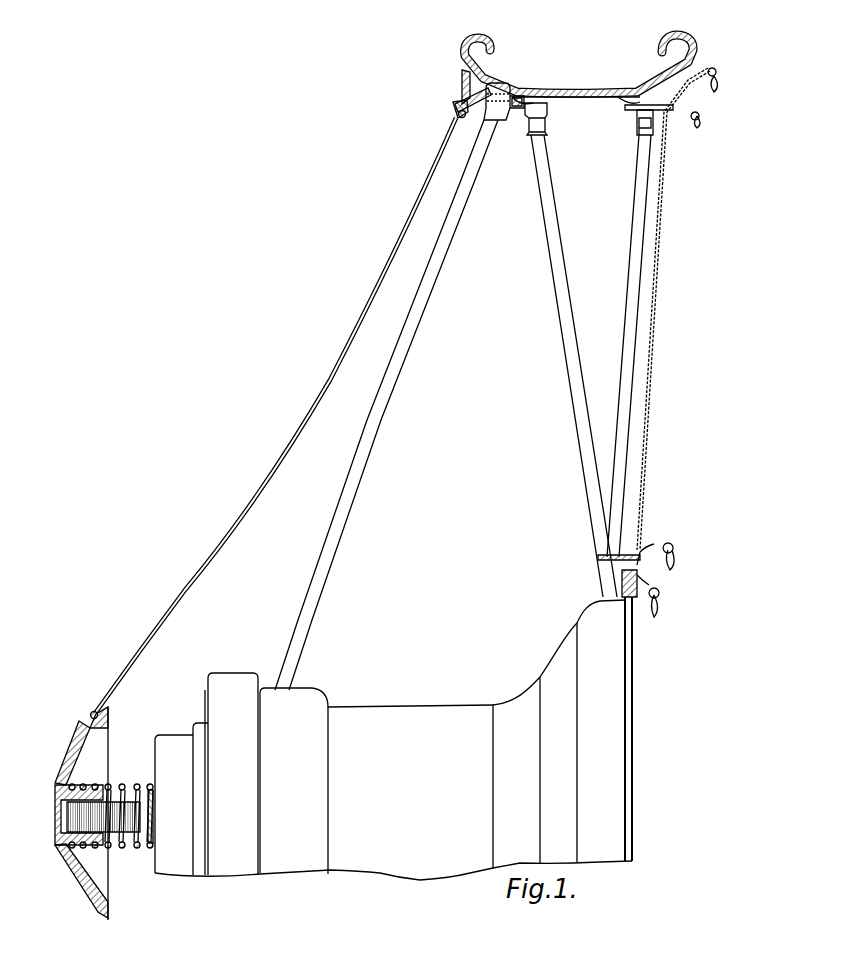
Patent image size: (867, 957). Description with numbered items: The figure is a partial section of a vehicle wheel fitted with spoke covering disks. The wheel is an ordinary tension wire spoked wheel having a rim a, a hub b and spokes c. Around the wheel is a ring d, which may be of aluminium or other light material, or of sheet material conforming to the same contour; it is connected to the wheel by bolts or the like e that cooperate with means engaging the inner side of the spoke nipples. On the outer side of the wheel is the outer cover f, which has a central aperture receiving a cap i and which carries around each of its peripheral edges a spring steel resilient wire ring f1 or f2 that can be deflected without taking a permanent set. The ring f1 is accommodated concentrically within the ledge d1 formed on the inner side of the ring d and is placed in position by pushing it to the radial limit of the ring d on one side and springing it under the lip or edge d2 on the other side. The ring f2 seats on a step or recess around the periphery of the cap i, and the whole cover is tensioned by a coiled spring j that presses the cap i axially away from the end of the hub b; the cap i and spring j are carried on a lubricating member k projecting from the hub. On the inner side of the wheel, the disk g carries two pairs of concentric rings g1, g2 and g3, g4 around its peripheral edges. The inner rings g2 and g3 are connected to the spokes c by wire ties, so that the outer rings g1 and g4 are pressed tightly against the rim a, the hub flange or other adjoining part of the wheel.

The rim a is at (588, 72).
The hub b is at (393, 738).
The spokes c is at (430, 281).
The ring d is at (472, 84).
The ledge d1 is at (462, 100).
The lip or edge d2 is at (456, 115).
The bolts e is at (530, 122).
The outer cover f is at (372, 288).
The resilient wire ring f1 is at (466, 118).
The resilient wire ring f2 is at (94, 710).
The disk g is at (660, 229).
The outer ring g1 is at (720, 67).
The inner ring g2 is at (674, 108).
The inner ring g3 is at (672, 540).
The outer ring g4 is at (658, 585).
The cap i is at (80, 738).
The coiled spring j is at (110, 790).
The lubricating member k is at (122, 846).